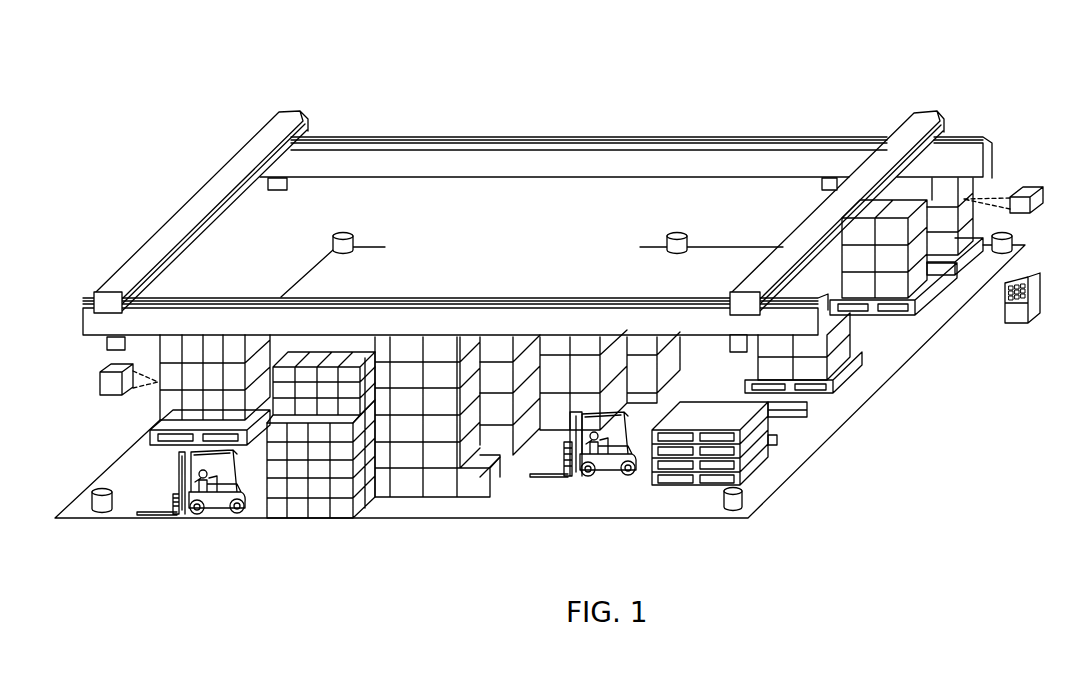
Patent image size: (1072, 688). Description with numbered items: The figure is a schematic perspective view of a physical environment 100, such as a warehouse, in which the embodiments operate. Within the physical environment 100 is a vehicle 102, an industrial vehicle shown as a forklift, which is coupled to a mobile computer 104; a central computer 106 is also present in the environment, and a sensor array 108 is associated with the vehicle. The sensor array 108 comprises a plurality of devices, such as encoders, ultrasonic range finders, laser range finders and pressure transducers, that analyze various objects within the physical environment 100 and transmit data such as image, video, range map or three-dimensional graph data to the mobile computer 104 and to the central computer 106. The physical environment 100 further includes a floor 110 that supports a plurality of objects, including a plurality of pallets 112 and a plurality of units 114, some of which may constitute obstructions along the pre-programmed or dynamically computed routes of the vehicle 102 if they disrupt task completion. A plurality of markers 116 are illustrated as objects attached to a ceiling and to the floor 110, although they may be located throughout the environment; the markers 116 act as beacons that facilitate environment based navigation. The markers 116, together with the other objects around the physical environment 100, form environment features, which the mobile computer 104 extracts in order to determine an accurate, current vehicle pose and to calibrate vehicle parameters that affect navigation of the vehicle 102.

The physical environment 100 is at (806, 48).
The vehicle 102 is at (217, 503).
The mobile computer 104 is at (566, 455).
The central computer 106 is at (1020, 326).
The sensor array 108 is at (580, 428).
The floor 110 is at (665, 500).
The pallets 112 is at (850, 373).
The units 114 is at (100, 380).
The markers 116 is at (277, 191).